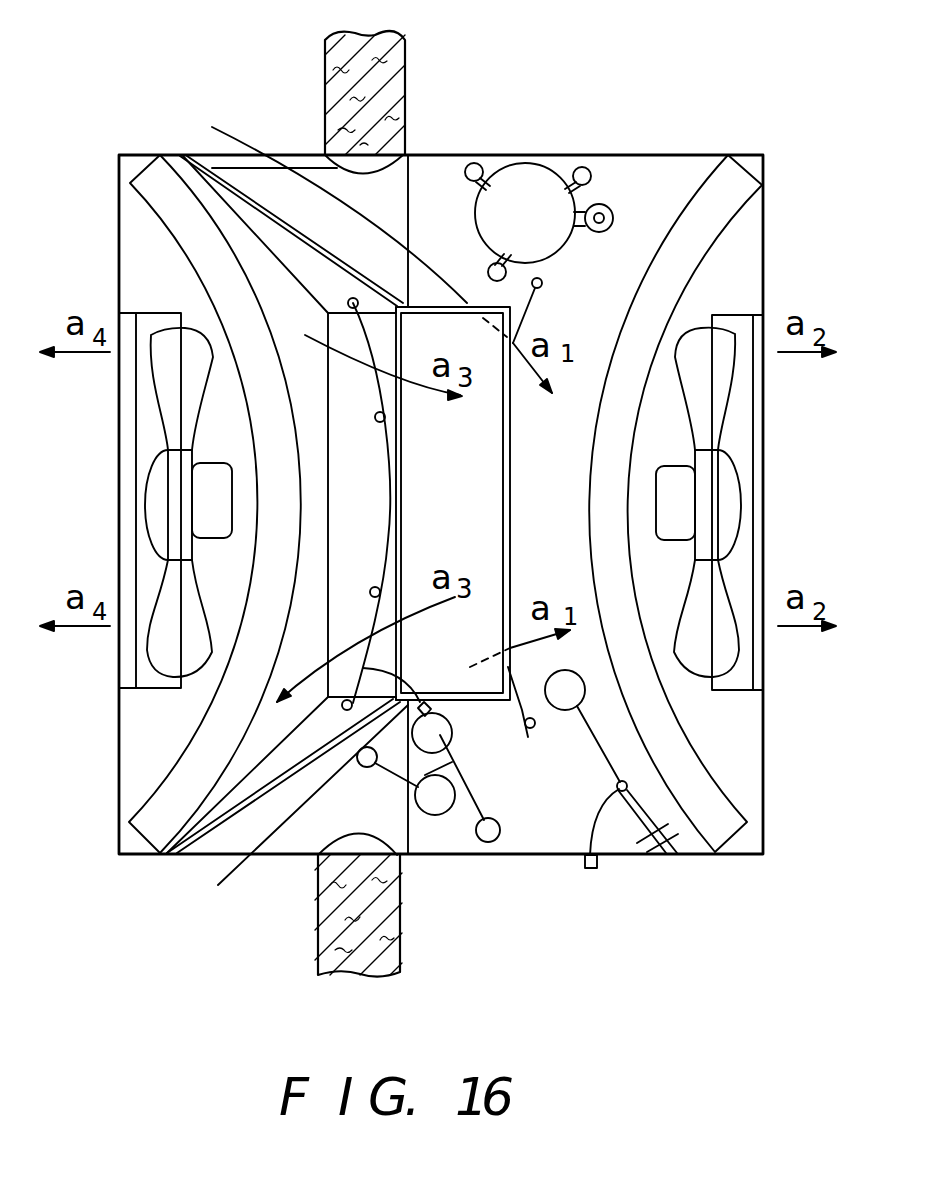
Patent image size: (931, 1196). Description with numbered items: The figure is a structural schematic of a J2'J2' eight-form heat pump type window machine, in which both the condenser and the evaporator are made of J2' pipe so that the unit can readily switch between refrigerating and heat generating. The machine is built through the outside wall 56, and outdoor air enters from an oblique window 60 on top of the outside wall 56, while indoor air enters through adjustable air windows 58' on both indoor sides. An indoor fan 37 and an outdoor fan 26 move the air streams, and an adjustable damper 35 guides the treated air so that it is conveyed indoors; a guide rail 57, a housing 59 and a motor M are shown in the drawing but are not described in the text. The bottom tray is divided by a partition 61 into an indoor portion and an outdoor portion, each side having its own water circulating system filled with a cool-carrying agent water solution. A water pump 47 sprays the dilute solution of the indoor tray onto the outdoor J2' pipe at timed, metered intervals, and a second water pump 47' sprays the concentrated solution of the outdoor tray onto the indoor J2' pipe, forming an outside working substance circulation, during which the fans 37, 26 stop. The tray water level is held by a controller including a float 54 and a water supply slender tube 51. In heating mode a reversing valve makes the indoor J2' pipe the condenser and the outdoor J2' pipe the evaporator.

The outside wall 56 is at (338, 68).
The adjustable air windows 58' is at (250, 127).
The guide rails 57 is at (297, 233).
The motor M is at (513, 163).
The adjustable damper 35 is at (127, 325).
The indoor fan 37 is at (175, 372).
The right fan housing 59 is at (760, 325).
The outdoor fan 26 is at (712, 657).
The oblique window 60 is at (483, 678).
The float 54 is at (557, 711).
The water pump 47 is at (423, 798).
The water pump 47' is at (496, 815).
The partition 61 is at (408, 828).
The water supply slender tube 51 is at (598, 861).
The J2' pipe J2' is at (435, 504).